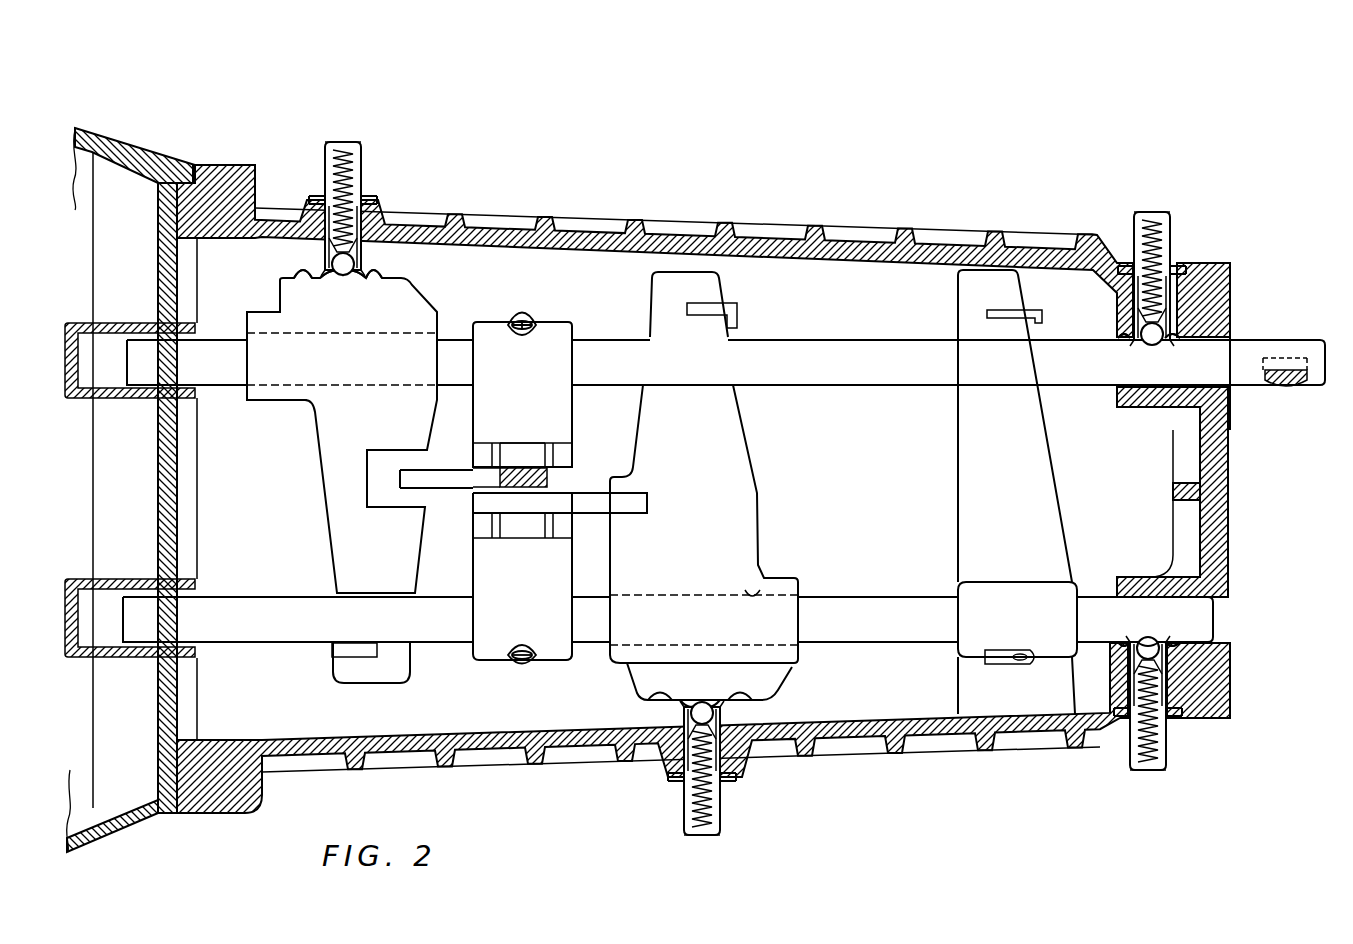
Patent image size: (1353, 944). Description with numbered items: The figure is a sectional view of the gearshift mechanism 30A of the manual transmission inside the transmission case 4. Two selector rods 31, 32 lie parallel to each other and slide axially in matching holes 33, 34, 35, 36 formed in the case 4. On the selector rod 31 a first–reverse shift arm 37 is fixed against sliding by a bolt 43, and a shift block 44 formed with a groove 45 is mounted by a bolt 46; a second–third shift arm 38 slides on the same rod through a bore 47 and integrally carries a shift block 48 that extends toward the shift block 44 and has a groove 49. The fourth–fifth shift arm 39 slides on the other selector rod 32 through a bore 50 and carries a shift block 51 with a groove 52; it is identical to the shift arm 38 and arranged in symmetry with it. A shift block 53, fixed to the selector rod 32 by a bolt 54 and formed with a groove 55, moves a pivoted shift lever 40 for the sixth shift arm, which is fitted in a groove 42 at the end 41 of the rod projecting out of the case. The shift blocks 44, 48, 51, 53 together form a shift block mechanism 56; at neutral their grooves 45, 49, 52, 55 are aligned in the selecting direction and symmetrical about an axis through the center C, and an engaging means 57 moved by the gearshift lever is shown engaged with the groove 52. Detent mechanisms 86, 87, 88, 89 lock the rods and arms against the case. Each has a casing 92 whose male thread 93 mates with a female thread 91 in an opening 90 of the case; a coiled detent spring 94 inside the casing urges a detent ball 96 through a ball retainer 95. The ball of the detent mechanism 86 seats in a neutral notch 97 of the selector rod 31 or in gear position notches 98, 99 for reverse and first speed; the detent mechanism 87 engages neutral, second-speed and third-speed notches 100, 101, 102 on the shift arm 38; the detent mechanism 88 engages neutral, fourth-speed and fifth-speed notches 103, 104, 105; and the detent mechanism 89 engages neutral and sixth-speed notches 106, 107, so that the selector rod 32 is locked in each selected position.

The transmission case 4 is at (185, 186).
The housing half 30A is at (765, 208).
The selector rod 31 is at (882, 645).
The selector rod 32 is at (825, 355).
The matching hole 33 is at (1233, 637).
The matching hole 34 is at (140, 658).
The matching hole 35 is at (1232, 335).
The matching hole 36 is at (140, 322).
The 1st-reverse shift arm 37 is at (985, 690).
The 2nd-3rd shift arm 38 is at (778, 660).
The 4th-5th shift arm 39 is at (425, 320).
The shift lever 40 is at (1287, 392).
The end of selector rod 41 is at (1315, 348).
The groove 42 is at (1278, 360).
The bolt 43 is at (1023, 666).
The shift block 44 is at (500, 620).
The groove 45 is at (512, 533).
The bolt 46 is at (518, 668).
The bore 47 is at (757, 590).
The shift block 48 is at (598, 510).
The groove 49 is at (510, 505).
The bore 50 is at (258, 318).
The shift block 51 is at (452, 474).
The groove 52 is at (548, 462).
The shift block 53 is at (555, 345).
The bolt 54 is at (526, 318).
The groove 55 is at (532, 452).
The shift block mechanism 56 is at (551, 672).
The engaging means 57 is at (500, 470).
The center C is at (548, 479).
The detent mechanism 86 is at (1175, 762).
The detent mechanism 87 is at (727, 826).
The detent mechanism 88 is at (330, 143).
The detent mechanism 89 is at (1133, 213).
The opening 90 is at (365, 260).
The female thread 91 is at (365, 205).
The detent casing 92 is at (365, 148).
The male thread 93 is at (328, 222).
The coiled detent spring 94 is at (341, 150).
The ball retainer 95 is at (330, 251).
The detent ball 96 is at (346, 276).
The neutral notch 97 is at (1148, 636).
The gear position notch 98 is at (1122, 640).
The gear position notch 99 is at (1187, 640).
The neutral notch 100 is at (700, 700).
The 2nd-speed notch 101 is at (668, 695).
The 3rd-speed notch 102 is at (730, 695).
The neutral notch 103 is at (340, 282).
The 4th-speed notch 104 is at (303, 282).
The 5th-speed notch 105 is at (373, 282).
The neutral notch 106 is at (1153, 348).
The 6th-speed notch 107 is at (1125, 340).